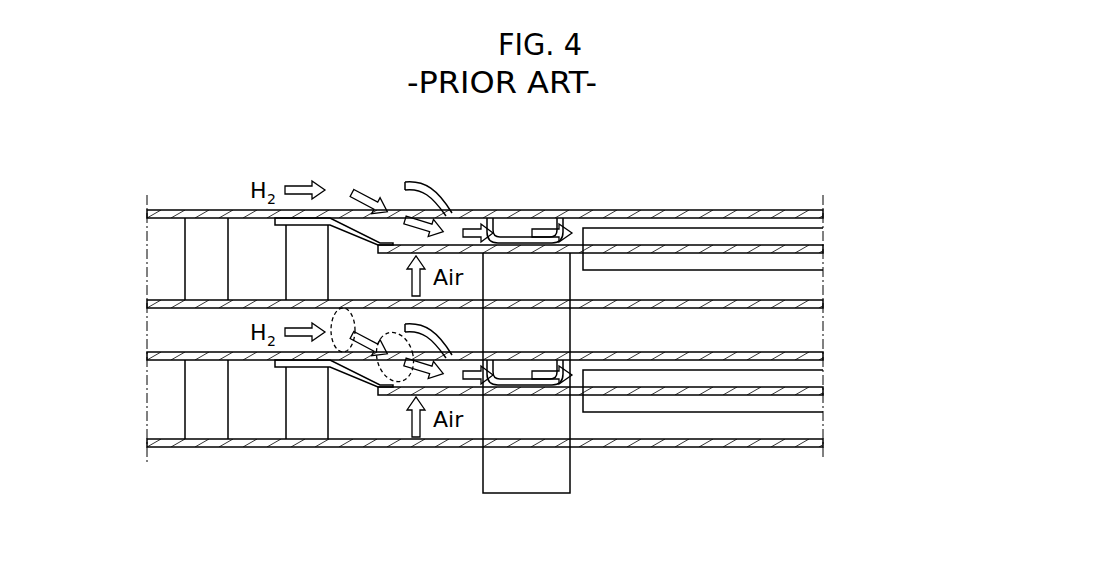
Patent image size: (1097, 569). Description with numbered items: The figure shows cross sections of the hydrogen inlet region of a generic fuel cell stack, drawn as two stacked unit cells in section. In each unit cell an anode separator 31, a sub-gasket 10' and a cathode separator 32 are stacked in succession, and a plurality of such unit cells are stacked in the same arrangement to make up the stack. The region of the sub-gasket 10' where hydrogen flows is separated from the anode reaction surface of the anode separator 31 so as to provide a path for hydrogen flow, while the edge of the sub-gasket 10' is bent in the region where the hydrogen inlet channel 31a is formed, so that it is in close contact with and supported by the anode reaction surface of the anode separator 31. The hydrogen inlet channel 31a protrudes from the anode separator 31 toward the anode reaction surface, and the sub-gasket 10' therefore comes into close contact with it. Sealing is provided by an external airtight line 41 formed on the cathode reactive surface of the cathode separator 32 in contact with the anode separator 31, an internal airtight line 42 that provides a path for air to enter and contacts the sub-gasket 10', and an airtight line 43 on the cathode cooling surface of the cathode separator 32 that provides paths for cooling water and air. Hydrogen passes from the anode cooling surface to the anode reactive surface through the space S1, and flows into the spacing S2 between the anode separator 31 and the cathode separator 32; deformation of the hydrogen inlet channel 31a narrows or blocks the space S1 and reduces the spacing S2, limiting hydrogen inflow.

The anode separator 31 is at (800, 213).
The cathode separator 32 is at (823, 304).
The sub-gasket 10' is at (652, 322).
The hydrogen inlet channel 31a is at (381, 243).
The external airtight line 41 is at (185, 262).
The internal airtight line 42 is at (290, 265).
The airtight line 43 is at (572, 328).
The space S1 is at (395, 378).
The spacing S2 is at (333, 346).